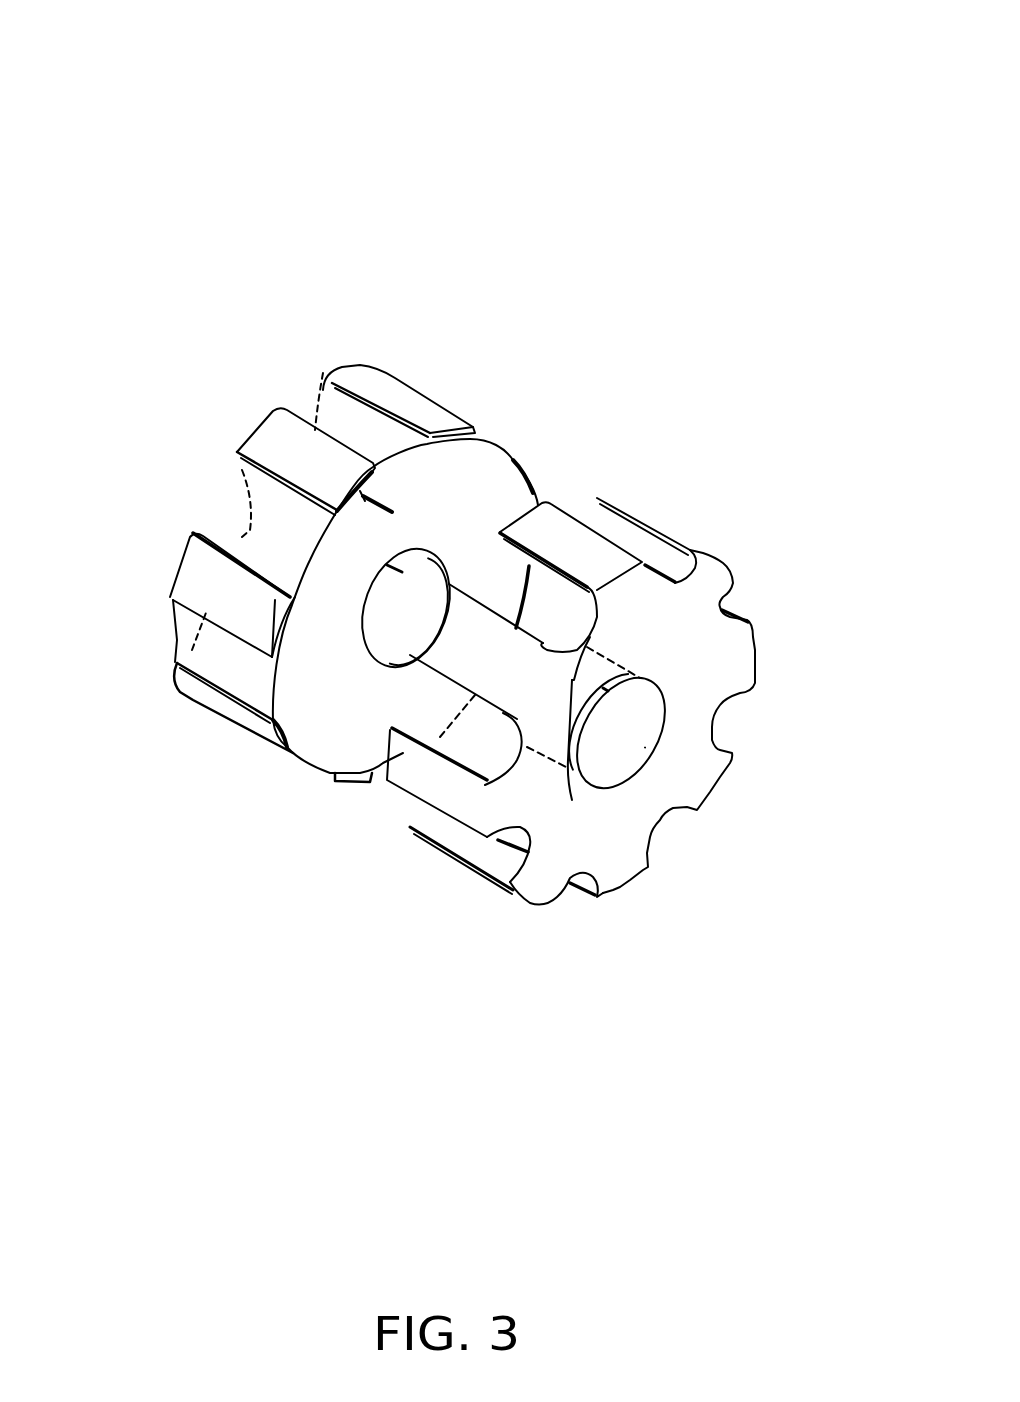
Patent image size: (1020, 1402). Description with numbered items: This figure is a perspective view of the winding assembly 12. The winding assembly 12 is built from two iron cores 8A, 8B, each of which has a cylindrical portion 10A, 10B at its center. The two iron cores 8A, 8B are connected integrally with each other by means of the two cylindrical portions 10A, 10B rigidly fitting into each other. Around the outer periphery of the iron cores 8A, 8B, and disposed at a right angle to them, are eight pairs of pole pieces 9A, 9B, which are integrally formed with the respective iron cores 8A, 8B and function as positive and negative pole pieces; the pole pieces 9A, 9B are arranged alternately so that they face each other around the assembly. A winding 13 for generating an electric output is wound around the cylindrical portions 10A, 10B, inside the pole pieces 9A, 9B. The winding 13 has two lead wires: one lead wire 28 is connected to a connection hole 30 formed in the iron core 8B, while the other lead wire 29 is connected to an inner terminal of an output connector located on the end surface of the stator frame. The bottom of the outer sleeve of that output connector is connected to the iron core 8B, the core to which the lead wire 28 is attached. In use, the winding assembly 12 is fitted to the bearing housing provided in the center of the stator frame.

The iron core 8A is at (235, 535).
The iron core 8B is at (678, 640).
The pole pieces 9A is at (300, 457).
The pole pieces 9B is at (578, 548).
The cylindrical portion 10A is at (400, 595).
The cylindrical portion 10B is at (623, 730).
The winding assembly 12 is at (456, 229).
The winding 13 is at (447, 483).
The lead wire 28 is at (360, 607).
The lead wire 29 is at (363, 496).
The connection hole 30 is at (572, 800).